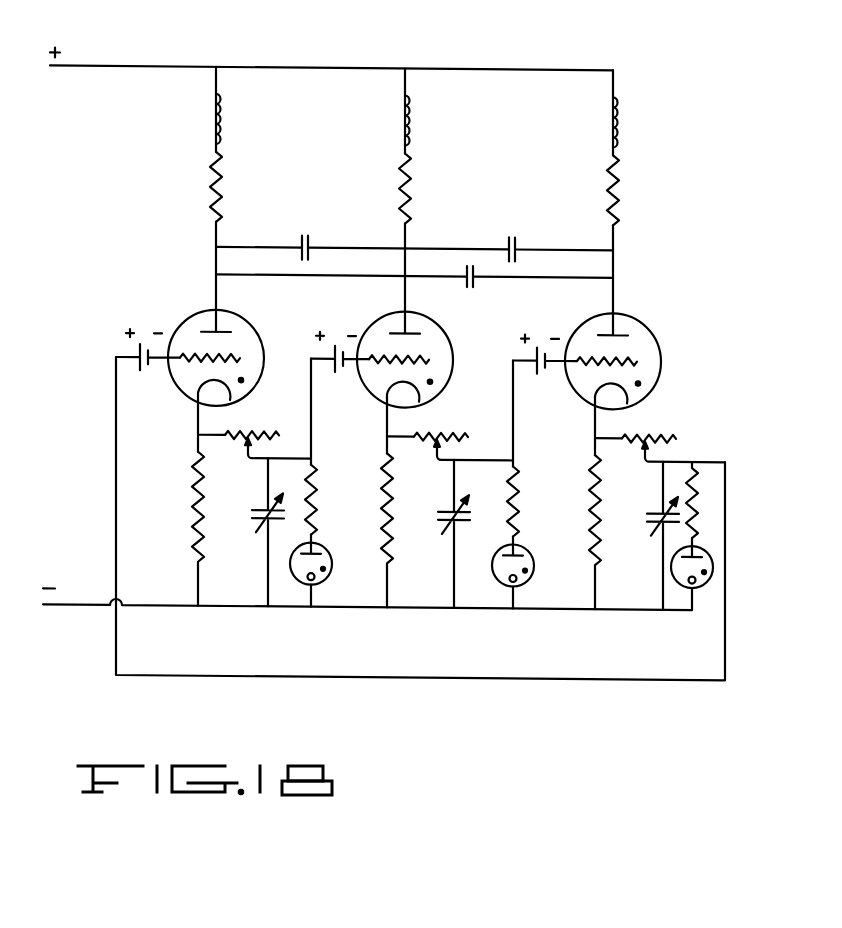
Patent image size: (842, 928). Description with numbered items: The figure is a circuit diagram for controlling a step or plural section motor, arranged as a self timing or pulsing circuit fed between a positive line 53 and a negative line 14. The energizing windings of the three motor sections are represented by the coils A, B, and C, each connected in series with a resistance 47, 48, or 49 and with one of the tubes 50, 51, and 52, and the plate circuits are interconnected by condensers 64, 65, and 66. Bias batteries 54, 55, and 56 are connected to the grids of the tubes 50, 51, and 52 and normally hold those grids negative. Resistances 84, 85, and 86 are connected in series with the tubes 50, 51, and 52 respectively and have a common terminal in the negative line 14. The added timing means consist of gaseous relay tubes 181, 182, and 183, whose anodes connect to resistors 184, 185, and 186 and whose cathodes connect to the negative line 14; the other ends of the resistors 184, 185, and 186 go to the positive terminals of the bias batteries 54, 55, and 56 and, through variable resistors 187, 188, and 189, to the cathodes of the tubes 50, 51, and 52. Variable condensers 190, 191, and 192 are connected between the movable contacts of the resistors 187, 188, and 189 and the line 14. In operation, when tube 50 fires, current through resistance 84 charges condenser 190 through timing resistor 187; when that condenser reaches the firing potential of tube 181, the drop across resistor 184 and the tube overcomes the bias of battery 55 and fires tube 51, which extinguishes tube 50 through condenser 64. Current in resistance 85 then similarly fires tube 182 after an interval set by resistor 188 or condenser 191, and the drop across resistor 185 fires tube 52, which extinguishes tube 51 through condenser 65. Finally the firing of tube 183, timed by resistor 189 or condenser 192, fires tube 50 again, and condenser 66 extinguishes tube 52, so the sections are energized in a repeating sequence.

The positive line 53 is at (160, 63).
The negative line 14 is at (70, 611).
The coil A is at (222, 97).
The coil B is at (410, 115).
The coil C is at (618, 114).
The resistance 47 is at (224, 183).
The resistance 48 is at (412, 187).
The resistance 49 is at (605, 195).
The condenser 64 is at (306, 238).
The condenser 65 is at (511, 238).
The condenser 66 is at (474, 285).
The tube 50 is at (181, 337).
The tube 51 is at (445, 349).
The tube 52 is at (645, 340).
The bias battery 54 is at (145, 368).
The bias battery 55 is at (336, 366).
The bias battery 56 is at (541, 365).
The variable resistor 187 is at (246, 425).
The variable resistor 188 is at (422, 425).
The variable resistor 189 is at (641, 426).
The resistance 84 is at (196, 522).
The resistance 85 is at (390, 516).
The resistance 86 is at (598, 510).
The resistor 184 is at (316, 497).
The resistor 185 is at (520, 500).
The resistor 186 is at (700, 515).
The variable condenser 190 is at (262, 507).
The variable condenser 191 is at (440, 514).
The variable condenser 192 is at (655, 518).
The gaseous relay tube 181 is at (326, 569).
The gaseous relay tube 182 is at (528, 569).
The gaseous relay tube 183 is at (703, 575).